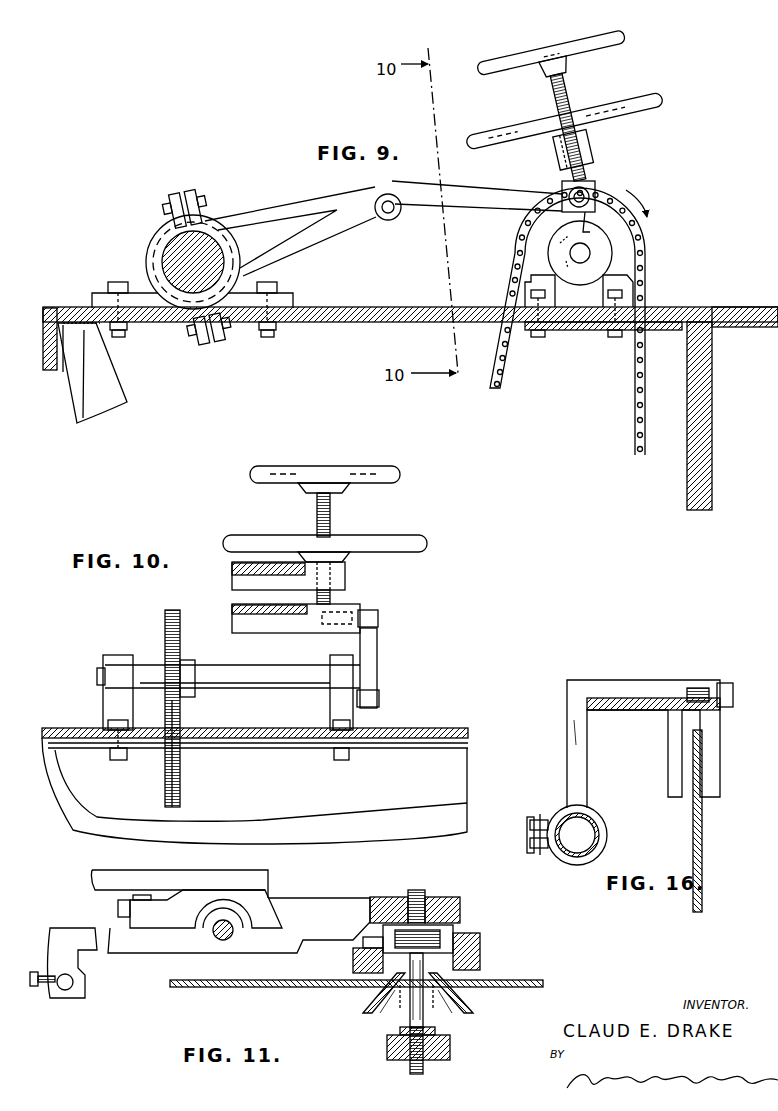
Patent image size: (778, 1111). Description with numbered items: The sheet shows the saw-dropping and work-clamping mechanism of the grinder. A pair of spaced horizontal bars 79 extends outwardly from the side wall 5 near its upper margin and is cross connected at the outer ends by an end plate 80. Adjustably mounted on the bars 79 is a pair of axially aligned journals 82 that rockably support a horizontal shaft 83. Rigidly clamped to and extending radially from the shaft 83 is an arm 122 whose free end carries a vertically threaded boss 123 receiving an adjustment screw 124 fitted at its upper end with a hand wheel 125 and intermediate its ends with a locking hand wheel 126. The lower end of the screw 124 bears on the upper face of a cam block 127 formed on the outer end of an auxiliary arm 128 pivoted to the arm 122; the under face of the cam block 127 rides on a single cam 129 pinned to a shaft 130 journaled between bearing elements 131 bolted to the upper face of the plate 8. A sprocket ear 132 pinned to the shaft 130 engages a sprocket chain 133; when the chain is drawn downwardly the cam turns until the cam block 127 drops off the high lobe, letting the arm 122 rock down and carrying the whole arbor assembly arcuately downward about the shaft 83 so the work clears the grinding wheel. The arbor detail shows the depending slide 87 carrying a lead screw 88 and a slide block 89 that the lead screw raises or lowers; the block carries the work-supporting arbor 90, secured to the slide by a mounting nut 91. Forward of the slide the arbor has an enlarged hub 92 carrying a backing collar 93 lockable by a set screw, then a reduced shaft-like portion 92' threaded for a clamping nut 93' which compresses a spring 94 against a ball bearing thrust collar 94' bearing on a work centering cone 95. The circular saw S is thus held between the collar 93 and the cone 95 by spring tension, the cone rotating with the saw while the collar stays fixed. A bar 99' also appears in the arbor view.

In FIG. 9, the side wall 5 is at (712, 404).
In FIG. 10, the side wall 5 is at (465, 812).
In FIG. 9, the plate 8 is at (712, 310).
In FIG. 9, the horizontal bars 79 is at (420, 322).
In FIG. 10, the horizontal bars 79 is at (55, 735).
In FIG. 9, the end plate 80 is at (55, 373).
In FIG. 9, the journals 82 is at (147, 265).
In FIG. 9, the horizontal shaft 83 is at (166, 252).
In FIG. 11, the slide 87 is at (270, 895).
In FIG. 11, the lead screw 88 is at (223, 942).
In FIG. 11, the slide block 89 is at (320, 898).
In FIG. 11, the work-supporting arbor 90 is at (418, 890).
In FIG. 11, the mounting nut 91 is at (450, 1049).
In FIG. 11, the hub 92 is at (439, 966).
In FIG. 11, the shaft-like portion 92' is at (404, 1080).
In FIG. 11, the backing collar 93 is at (422, 944).
In FIG. 11, the clamping nut 93' is at (371, 1065).
In FIG. 11, the spring 94 is at (414, 1008).
In FIG. 11, the ball bearing thrust collar 94' is at (451, 997).
In FIG. 11, the work centering cone 95 is at (365, 1005).
In FIG. 11, the bar 99' is at (170, 875).
In FIG. 9, the arm 122 is at (272, 210).
In FIG. 10, the arm 122 is at (232, 572).
In FIG. 9, the threaded boss 123 is at (590, 150).
In FIG. 9, the adjustment screw 124 is at (571, 98).
In FIG. 10, the adjustment screw 124 is at (331, 521).
In FIG. 9, the hand wheel 125 is at (624, 41).
In FIG. 10, the hand wheel 125 is at (360, 470).
In FIG. 9, the locking hand wheel 126 is at (661, 103).
In FIG. 10, the locking hand wheel 126 is at (405, 541).
In FIG. 9, the cam block 127 is at (596, 186).
In FIG. 9, the auxiliary arm 128 is at (485, 202).
In FIG. 10, the auxiliary arm 128 is at (232, 612).
In FIG. 9, the cam 129 is at (588, 230).
In FIG. 10, the cam 129 is at (378, 645).
In FIG. 9, the shaft 130 is at (590, 255).
In FIG. 10, the shaft 130 is at (275, 690).
In FIG. 9, the bearing elements 131 is at (583, 330).
In FIG. 10, the bearing elements 131 is at (103, 704).
In FIG. 9, the sprocket ear 132 is at (640, 271).
In FIG. 10, the sprocket ear 132 is at (181, 702).
In FIG. 9, the sprocket chain 133 is at (500, 384).
In FIG. 10, the sprocket chain 133 is at (182, 800).
In FIG. 11, the circular saw S is at (540, 988).
In FIG. 16, the circular saw S is at (703, 851).